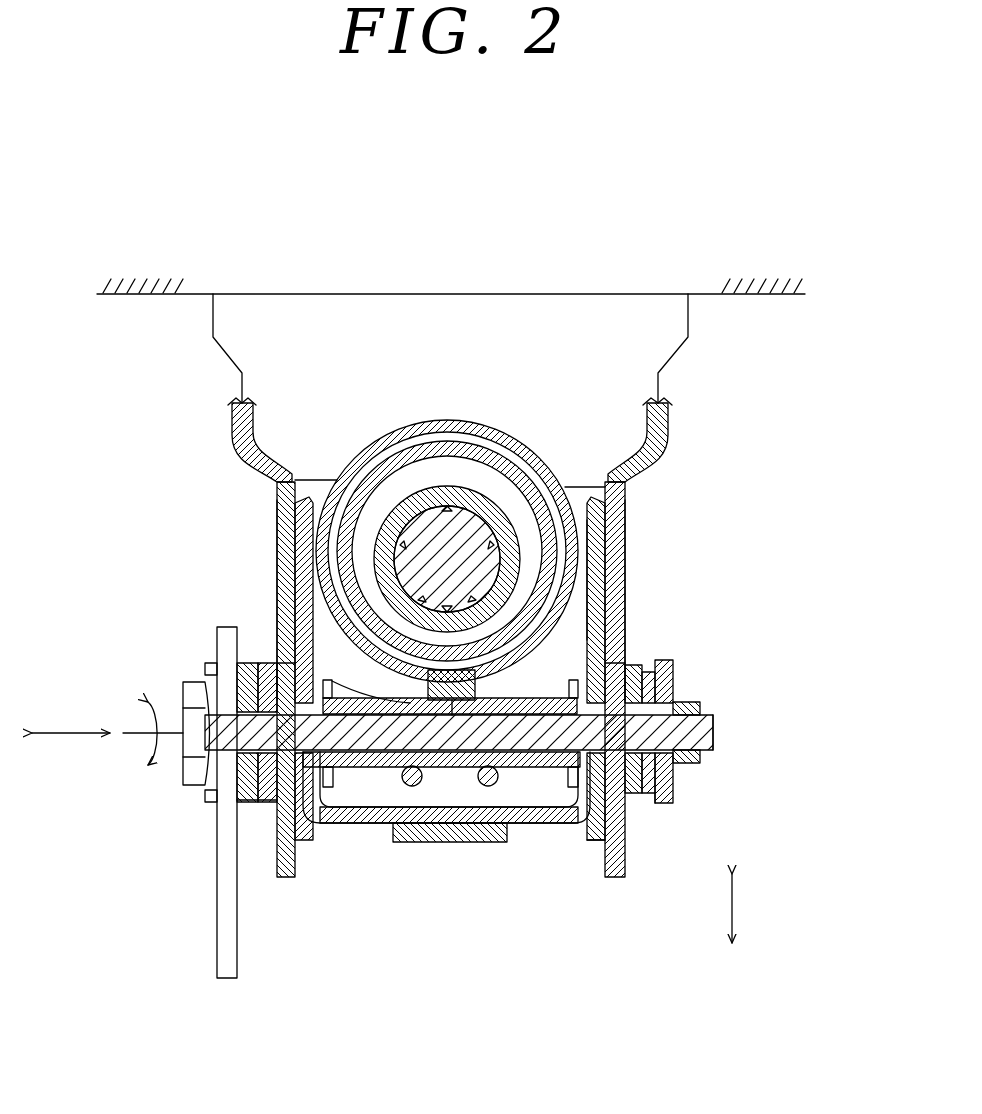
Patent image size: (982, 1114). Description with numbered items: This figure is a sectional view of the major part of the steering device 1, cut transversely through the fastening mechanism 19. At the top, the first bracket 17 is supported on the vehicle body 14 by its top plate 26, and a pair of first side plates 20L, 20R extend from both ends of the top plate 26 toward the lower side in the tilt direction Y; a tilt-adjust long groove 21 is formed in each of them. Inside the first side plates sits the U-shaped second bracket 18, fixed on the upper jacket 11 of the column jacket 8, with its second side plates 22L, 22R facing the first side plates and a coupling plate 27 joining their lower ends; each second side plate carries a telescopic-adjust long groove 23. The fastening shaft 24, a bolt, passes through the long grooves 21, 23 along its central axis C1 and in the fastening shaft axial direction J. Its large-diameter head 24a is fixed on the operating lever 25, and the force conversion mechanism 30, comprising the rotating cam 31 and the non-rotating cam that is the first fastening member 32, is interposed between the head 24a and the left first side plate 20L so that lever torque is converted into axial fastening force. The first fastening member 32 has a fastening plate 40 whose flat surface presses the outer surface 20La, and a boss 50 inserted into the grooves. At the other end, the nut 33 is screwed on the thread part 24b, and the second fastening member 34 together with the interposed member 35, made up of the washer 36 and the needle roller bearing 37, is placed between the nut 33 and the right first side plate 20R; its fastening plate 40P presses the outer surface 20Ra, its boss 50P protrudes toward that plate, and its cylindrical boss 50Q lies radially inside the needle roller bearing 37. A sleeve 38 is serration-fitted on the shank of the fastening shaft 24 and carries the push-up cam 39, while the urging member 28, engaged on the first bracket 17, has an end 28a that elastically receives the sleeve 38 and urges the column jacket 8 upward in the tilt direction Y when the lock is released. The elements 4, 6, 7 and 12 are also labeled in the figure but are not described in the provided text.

The steering device 1 is at (775, 337).
The steering shaft assembly 4 is at (679, 462).
The upper shaft 6 is at (497, 505).
The lower shaft 7 is at (480, 545).
The column jacket 8 is at (190, 452).
The upper jacket 11 is at (277, 482).
The inner column tube 12 is at (322, 513).
The vehicle body 14 is at (156, 291).
The first bracket 17 is at (614, 578).
The second bracket 18 is at (672, 423).
The fastening mechanism 19 is at (172, 692).
The left first side plate 20L is at (283, 529).
The outer surface of the left first side plate 20La is at (283, 555).
The right first side plate 20R is at (625, 557).
The outer surface of the right first side plate 20Ra is at (625, 535).
The tilt-adjust long groove 21 is at (265, 660).
The left second side plate 22L is at (303, 575).
The right second side plate 22R is at (597, 593).
The telescopic-adjust long groove 23 is at (335, 790).
The fastening shaft 24 is at (390, 760).
The head 24a is at (197, 787).
The thread part 24b is at (713, 732).
The operating lever 25 is at (217, 957).
The top plate 26 is at (522, 292).
The coupling plate 27 is at (515, 826).
The urging member 28 is at (492, 792).
The other end of the urging member 28a is at (420, 790).
The force conversion mechanism 30 is at (340, 935).
The rotating cam 31 is at (250, 825).
The first fastening member 32 is at (285, 812).
The nut 33 is at (700, 710).
The second fastening member 34 is at (663, 805).
The interposed member 35 is at (745, 638).
The washer 36 is at (673, 668).
The needle roller bearing 37 is at (673, 688).
The sleeve 38 is at (440, 703).
The push-up cam 39 is at (455, 752).
The fastening plate 40 is at (260, 688).
The fastening plate 40P is at (660, 783).
The boss 50 is at (232, 658).
The boss 50P is at (620, 800).
The boss 50Q is at (685, 755).
The central axis C1 is at (130, 727).
The fastening shaft axial direction J is at (70, 740).
The tilt direction Y is at (762, 905).